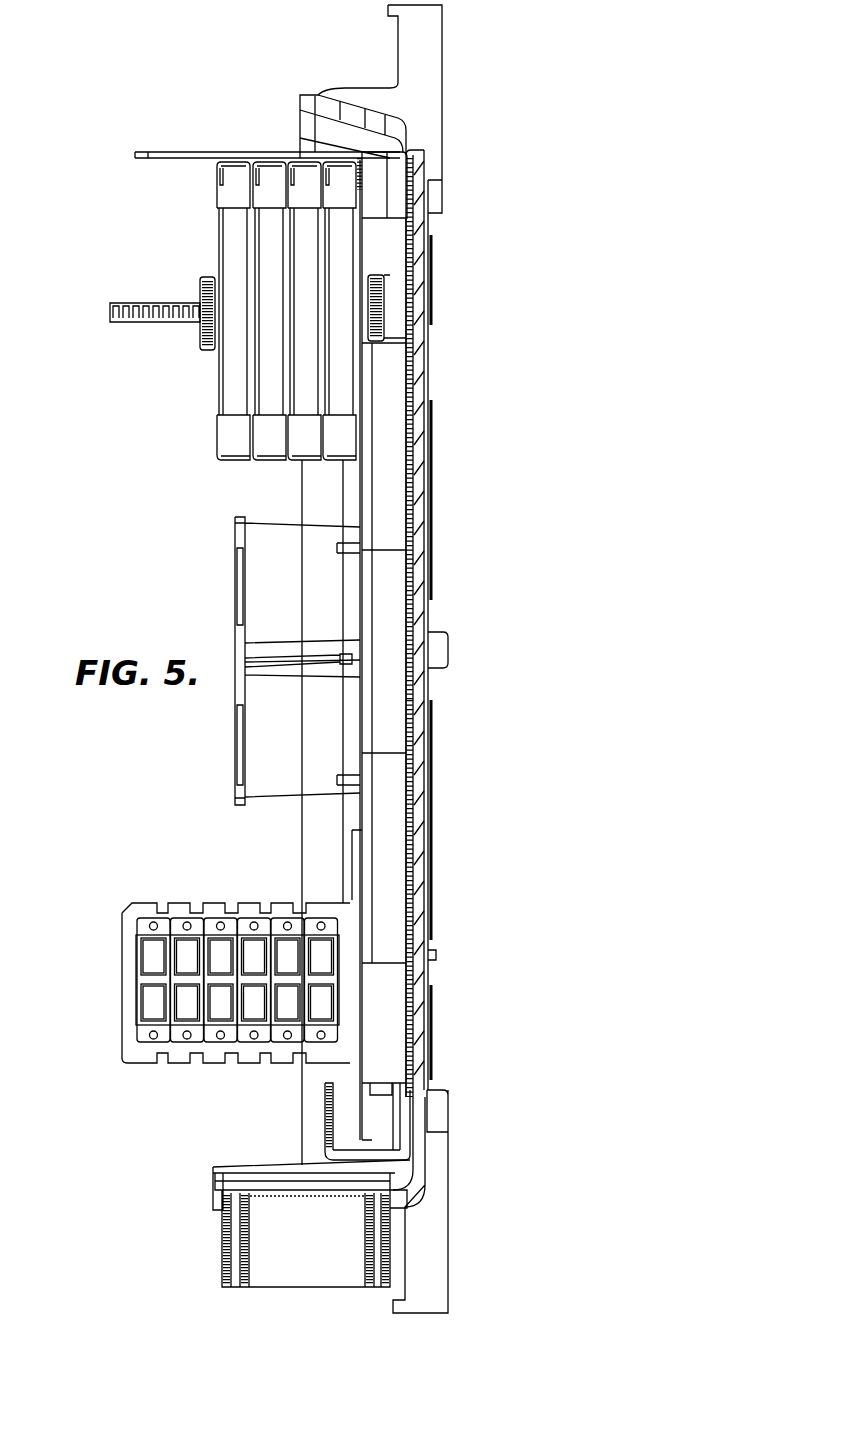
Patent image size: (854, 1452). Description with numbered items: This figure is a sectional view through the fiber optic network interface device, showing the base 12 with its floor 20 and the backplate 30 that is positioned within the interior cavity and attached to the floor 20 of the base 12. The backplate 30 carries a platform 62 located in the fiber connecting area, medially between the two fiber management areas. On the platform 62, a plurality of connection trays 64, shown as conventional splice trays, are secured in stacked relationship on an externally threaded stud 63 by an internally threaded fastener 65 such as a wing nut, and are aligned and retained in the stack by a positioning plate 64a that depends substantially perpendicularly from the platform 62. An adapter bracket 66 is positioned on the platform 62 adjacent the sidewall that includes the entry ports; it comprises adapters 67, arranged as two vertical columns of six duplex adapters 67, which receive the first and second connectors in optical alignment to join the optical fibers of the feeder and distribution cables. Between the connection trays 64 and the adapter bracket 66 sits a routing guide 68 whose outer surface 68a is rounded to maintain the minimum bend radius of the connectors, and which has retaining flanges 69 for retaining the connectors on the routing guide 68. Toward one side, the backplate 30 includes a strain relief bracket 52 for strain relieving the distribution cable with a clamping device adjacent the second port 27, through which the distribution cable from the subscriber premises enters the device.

The base 12 is at (442, 68).
The floor 20 is at (428, 795).
The second port 27 is at (295, 1268).
The backplate 30 is at (430, 402).
The strain relief bracket 52 is at (326, 1122).
The platform 62 is at (355, 828).
The externally threaded stud 63 is at (114, 303).
The connection tray 64 is at (238, 442).
The positioning plate 64a is at (218, 153).
The internally threaded fastener 65 is at (200, 333).
The adapter bracket 66 is at (138, 1052).
The adapter 67 is at (155, 957).
The routing guide 68 is at (265, 570).
The outer surface 68a is at (322, 610).
The retaining flange 69 is at (235, 773).